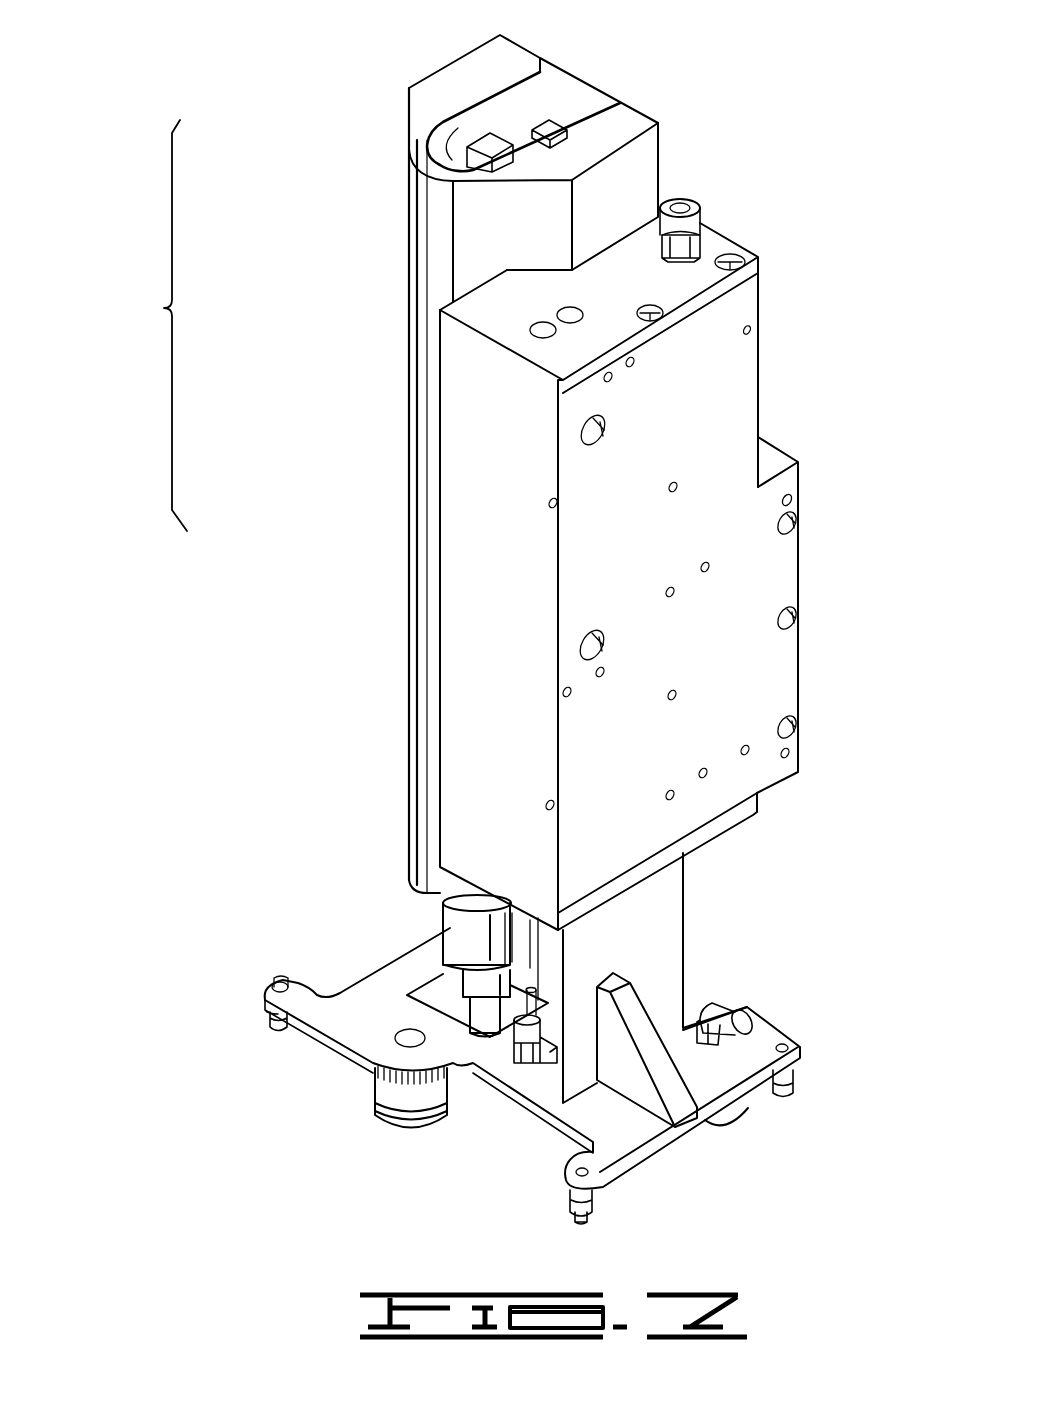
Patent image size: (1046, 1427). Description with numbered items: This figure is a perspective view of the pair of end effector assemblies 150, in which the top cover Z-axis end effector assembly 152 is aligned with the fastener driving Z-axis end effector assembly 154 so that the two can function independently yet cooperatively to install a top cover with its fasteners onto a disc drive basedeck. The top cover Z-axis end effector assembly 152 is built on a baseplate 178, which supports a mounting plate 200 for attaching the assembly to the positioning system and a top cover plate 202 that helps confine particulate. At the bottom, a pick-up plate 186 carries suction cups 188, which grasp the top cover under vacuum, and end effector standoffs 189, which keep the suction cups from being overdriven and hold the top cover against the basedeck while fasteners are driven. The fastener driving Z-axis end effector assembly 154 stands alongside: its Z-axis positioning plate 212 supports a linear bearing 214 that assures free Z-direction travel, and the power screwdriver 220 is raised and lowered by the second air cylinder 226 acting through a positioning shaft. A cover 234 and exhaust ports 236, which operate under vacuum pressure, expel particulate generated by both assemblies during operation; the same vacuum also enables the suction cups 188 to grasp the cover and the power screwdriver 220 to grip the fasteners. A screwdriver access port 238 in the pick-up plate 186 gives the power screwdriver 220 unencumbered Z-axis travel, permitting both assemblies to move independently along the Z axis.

The pair of end effector assemblies 150 is at (164, 308).
The top cover Z-axis end effector assembly 152 is at (476, 509).
The fastener driving Z-axis end effector assembly 154 is at (398, 181).
The baseplate 178 is at (600, 563).
The pick-up plate 186 is at (358, 1015).
The suction cups 188 is at (385, 1115).
The end effector standoffs 189 is at (270, 1010).
The mounting plate 200 is at (770, 440).
The top cover plate 202 is at (685, 280).
The Z-axis positioning plate 212 is at (565, 115).
The linear bearing 214 is at (535, 128).
The power screwdriver 220 is at (460, 930).
The second air cylinder 226 is at (483, 143).
The cover 234 is at (420, 430).
The exhaust ports 236 is at (683, 212).
The screwdriver access port 238 is at (450, 998).